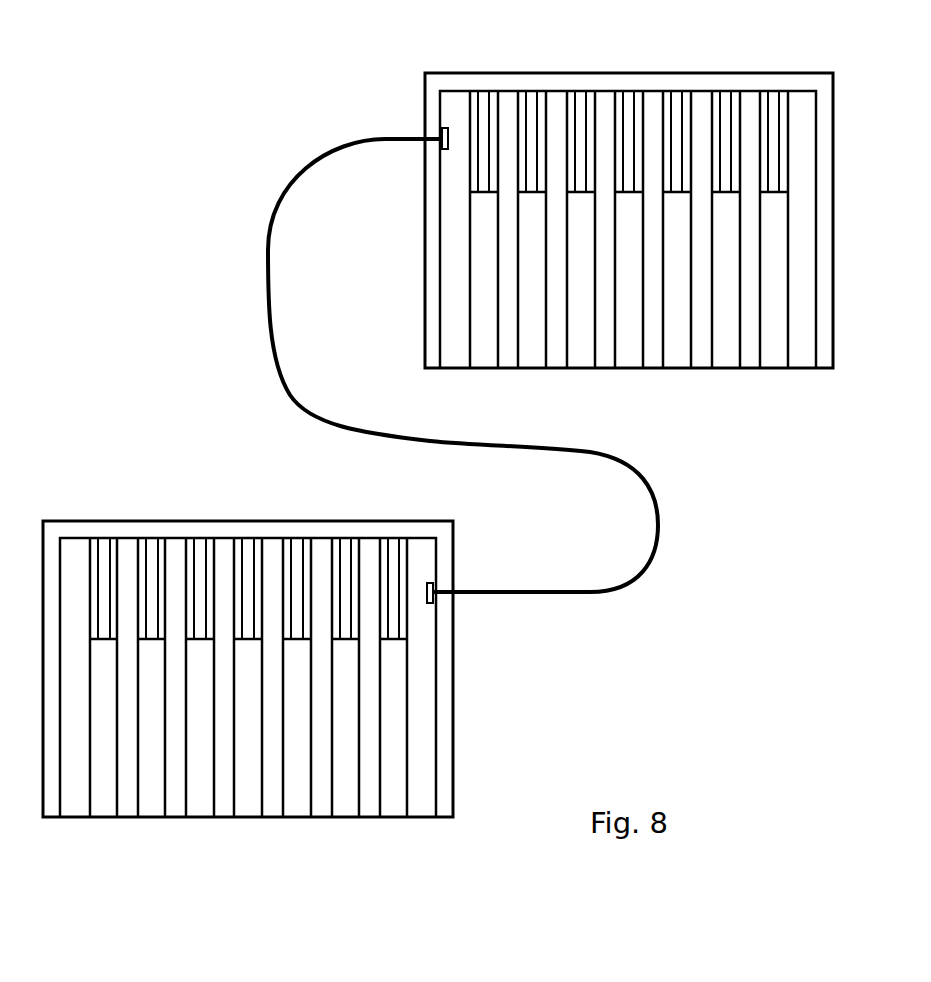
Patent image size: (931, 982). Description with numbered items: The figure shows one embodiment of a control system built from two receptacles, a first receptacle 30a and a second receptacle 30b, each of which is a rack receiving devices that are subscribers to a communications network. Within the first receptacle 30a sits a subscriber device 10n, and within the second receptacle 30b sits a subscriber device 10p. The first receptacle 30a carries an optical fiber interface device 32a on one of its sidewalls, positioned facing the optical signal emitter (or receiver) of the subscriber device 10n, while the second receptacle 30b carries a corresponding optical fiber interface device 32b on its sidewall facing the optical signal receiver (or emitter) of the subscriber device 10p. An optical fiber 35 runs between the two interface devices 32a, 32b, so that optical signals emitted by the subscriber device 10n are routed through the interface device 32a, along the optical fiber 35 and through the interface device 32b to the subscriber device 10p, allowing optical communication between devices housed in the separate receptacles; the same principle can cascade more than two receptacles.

The first receptacle 30a is at (128, 521).
The second receptacle 30b is at (752, 72).
The subscriber device 10n is at (400, 788).
The subscriber device 10p is at (478, 340).
The optical fiber interface device 32a is at (428, 601).
The optical fiber interface device 32b is at (449, 130).
The optical fiber 35 is at (268, 236).